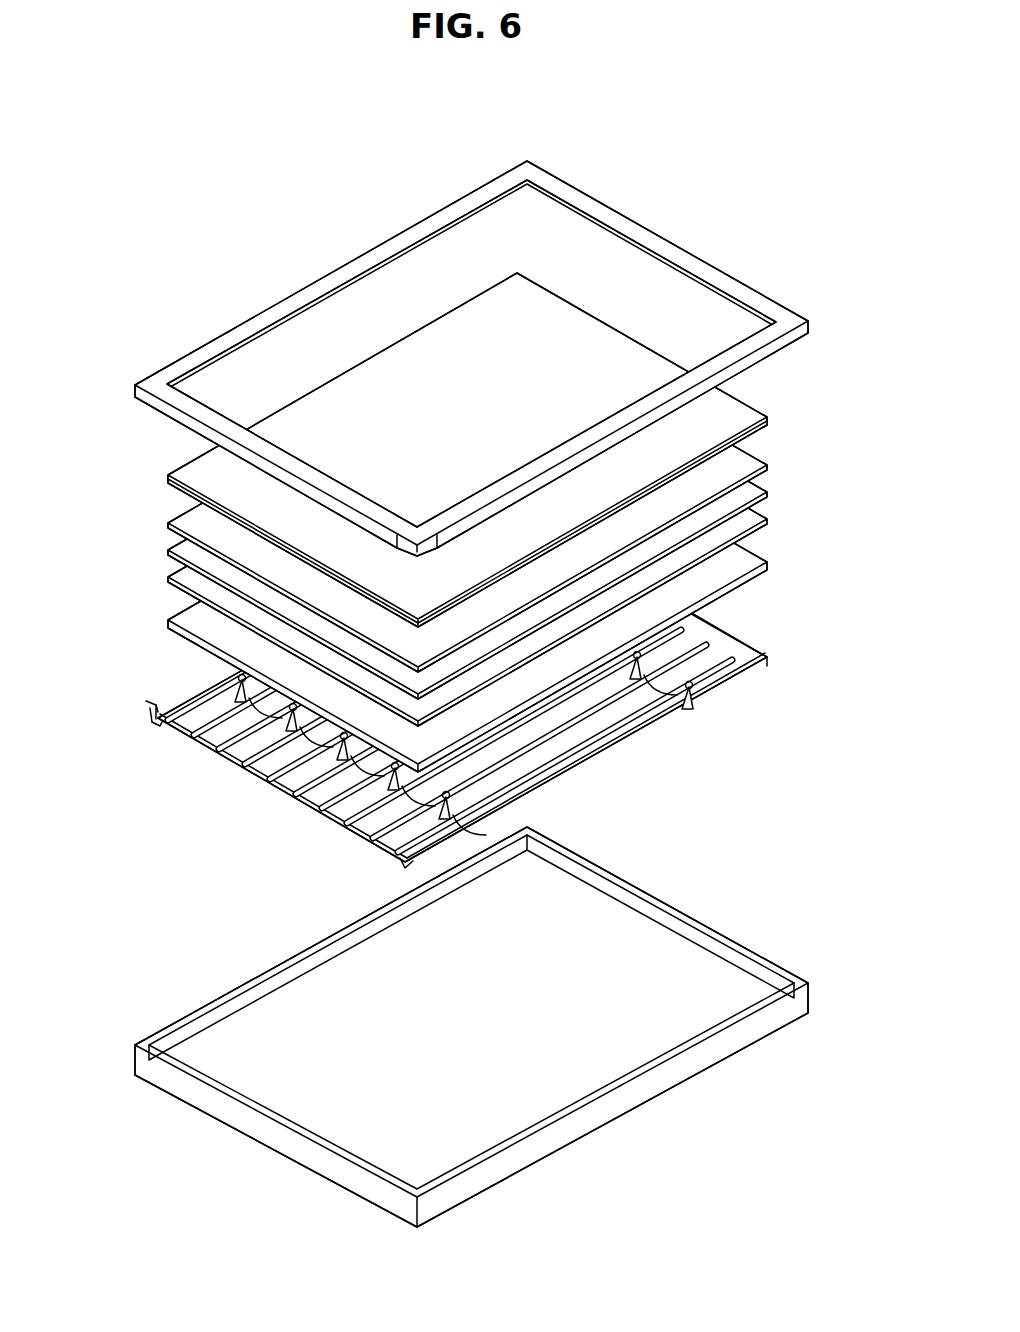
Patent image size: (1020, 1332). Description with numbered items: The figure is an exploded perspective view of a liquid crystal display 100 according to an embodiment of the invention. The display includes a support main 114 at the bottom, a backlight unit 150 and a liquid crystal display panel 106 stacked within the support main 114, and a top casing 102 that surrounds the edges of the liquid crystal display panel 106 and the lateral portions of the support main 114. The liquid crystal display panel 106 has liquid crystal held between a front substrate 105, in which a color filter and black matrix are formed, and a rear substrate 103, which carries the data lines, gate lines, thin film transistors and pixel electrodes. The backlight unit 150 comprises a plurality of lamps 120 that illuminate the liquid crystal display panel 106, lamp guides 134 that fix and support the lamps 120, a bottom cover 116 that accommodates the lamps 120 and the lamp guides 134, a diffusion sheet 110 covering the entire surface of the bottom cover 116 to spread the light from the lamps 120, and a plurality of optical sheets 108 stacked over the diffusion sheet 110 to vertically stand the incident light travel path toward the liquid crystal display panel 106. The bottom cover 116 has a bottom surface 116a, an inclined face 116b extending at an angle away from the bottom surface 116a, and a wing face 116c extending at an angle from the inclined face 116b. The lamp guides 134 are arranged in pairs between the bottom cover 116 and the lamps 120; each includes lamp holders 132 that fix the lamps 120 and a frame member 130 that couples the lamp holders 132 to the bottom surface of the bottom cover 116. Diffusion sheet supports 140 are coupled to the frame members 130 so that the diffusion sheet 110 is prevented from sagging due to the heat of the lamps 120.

The liquid crystal display 100 is at (187, 163).
The top casing 102 is at (745, 294).
The rear substrate 103 is at (758, 428).
The front substrate 105 is at (758, 418).
The liquid crystal display panel 106 is at (538, 450).
The optical sheets 108 is at (783, 468).
The diffusion sheet 110 is at (765, 556).
The support main 114 is at (753, 957).
The bottom cover 116 is at (88, 731).
The bottom surface 116a is at (115, 749).
The inclined face 116b is at (155, 716).
The wing face 116c is at (152, 704).
The lamps 120 is at (391, 705).
The frame member 130 is at (248, 760).
The lamp holders 132 is at (265, 778).
The lamp guides 134 is at (143, 800).
The diffusion sheet supports 140 is at (373, 797).
The backlight unit 150 is at (858, 473).